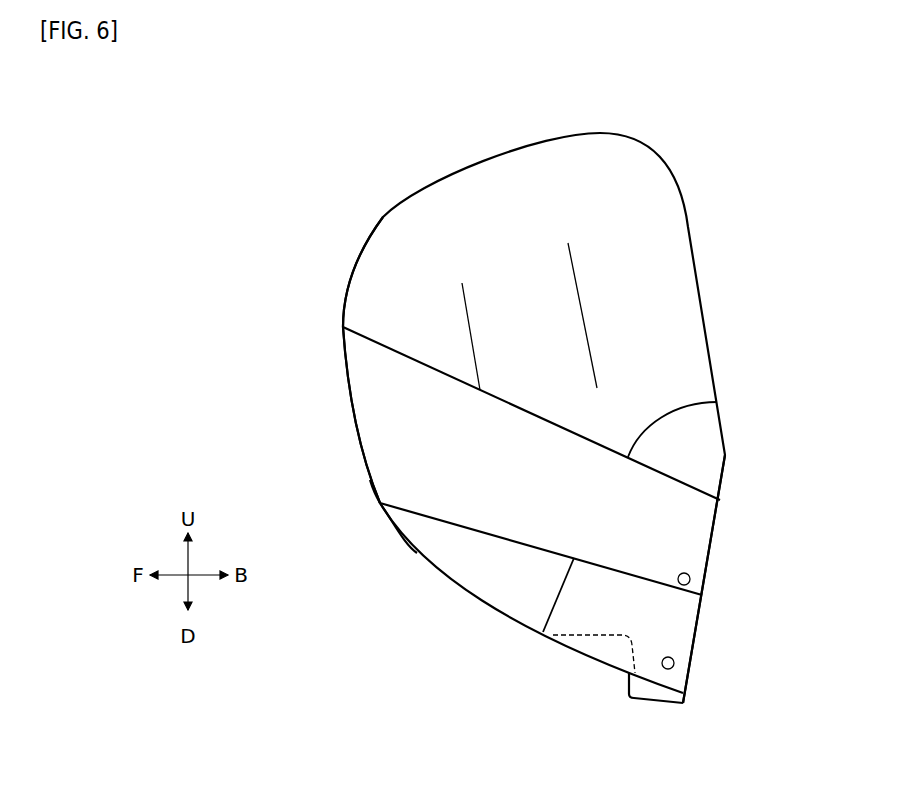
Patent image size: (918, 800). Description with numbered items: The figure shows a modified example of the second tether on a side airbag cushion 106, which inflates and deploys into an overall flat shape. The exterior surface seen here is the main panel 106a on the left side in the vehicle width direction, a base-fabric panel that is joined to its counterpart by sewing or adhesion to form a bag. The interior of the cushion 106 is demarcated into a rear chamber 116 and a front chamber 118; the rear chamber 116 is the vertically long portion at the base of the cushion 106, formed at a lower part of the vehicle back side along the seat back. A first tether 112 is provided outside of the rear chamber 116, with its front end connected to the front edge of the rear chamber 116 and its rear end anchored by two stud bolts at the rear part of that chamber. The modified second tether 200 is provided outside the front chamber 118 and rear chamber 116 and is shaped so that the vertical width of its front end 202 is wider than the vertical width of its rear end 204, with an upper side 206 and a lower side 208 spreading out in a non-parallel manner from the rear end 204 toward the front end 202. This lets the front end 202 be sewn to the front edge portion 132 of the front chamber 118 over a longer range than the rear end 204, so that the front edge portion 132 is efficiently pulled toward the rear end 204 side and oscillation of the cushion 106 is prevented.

The cushion 106 is at (632, 137).
The main panel 106a is at (385, 255).
The front chamber 118 is at (497, 207).
The rear chamber 116 is at (727, 453).
The first tether 112 is at (680, 635).
The front edge portion 132 is at (382, 513).
The second tether 200 is at (442, 508).
The front end 202 is at (342, 328).
The rear end 204 is at (720, 503).
The upper side 206 is at (518, 408).
The lower side 208 is at (505, 538).